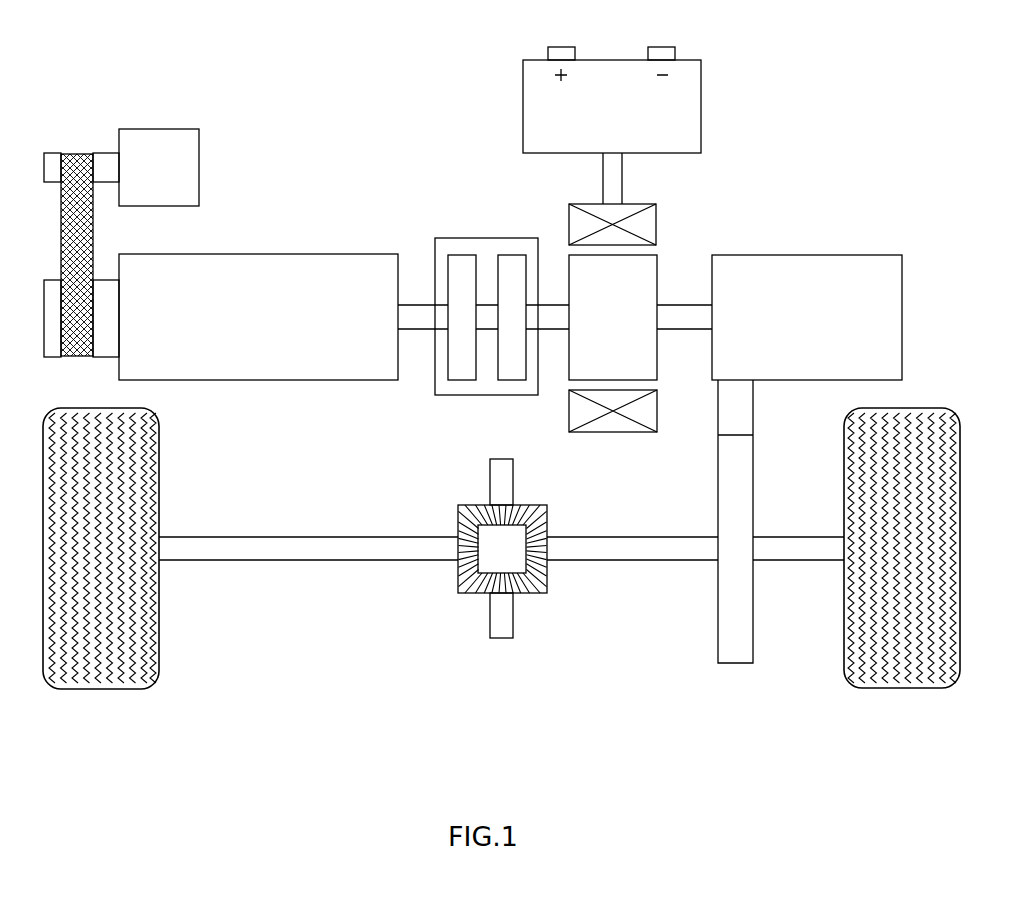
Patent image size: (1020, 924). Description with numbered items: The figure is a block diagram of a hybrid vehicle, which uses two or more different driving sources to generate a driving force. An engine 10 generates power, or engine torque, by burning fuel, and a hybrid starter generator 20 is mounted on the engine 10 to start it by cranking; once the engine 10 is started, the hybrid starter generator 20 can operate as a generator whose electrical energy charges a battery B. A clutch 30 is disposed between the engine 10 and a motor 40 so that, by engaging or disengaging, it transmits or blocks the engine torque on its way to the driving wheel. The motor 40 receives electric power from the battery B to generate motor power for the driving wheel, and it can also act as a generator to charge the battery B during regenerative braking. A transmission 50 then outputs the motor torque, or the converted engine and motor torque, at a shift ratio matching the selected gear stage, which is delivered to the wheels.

The engine 10 is at (258, 253).
The hybrid starter generator 20 is at (158, 128).
The clutch 30 is at (487, 237).
The motor 40 is at (627, 352).
The transmission 50 is at (805, 253).
The battery B is at (611, 58).